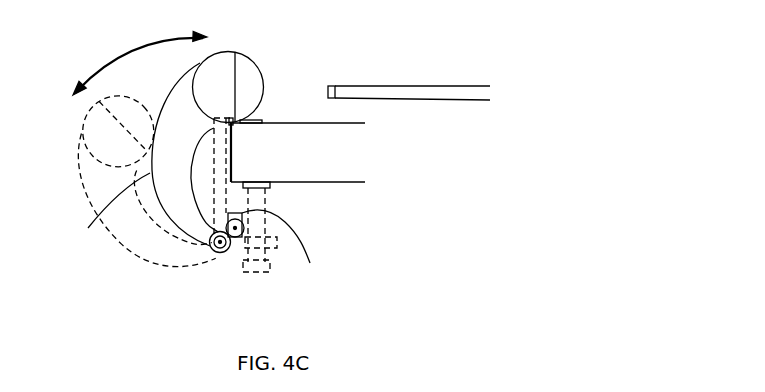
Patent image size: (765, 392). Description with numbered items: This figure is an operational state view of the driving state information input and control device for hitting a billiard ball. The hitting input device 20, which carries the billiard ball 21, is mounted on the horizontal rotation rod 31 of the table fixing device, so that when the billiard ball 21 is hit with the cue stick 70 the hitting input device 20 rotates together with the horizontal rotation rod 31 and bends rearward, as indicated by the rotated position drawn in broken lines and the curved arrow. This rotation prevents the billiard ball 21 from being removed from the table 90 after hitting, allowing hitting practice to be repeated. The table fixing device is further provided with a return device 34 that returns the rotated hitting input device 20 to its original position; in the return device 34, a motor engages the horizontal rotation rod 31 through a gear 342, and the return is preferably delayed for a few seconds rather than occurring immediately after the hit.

The hitting input device 20 is at (102, 221).
The billiard ball 21 is at (248, 80).
The horizontal rotation rod 31 is at (213, 244).
The return device 34 is at (290, 241).
The gear 342 is at (247, 247).
The cue stick 70 is at (350, 92).
The table 90 is at (300, 167).